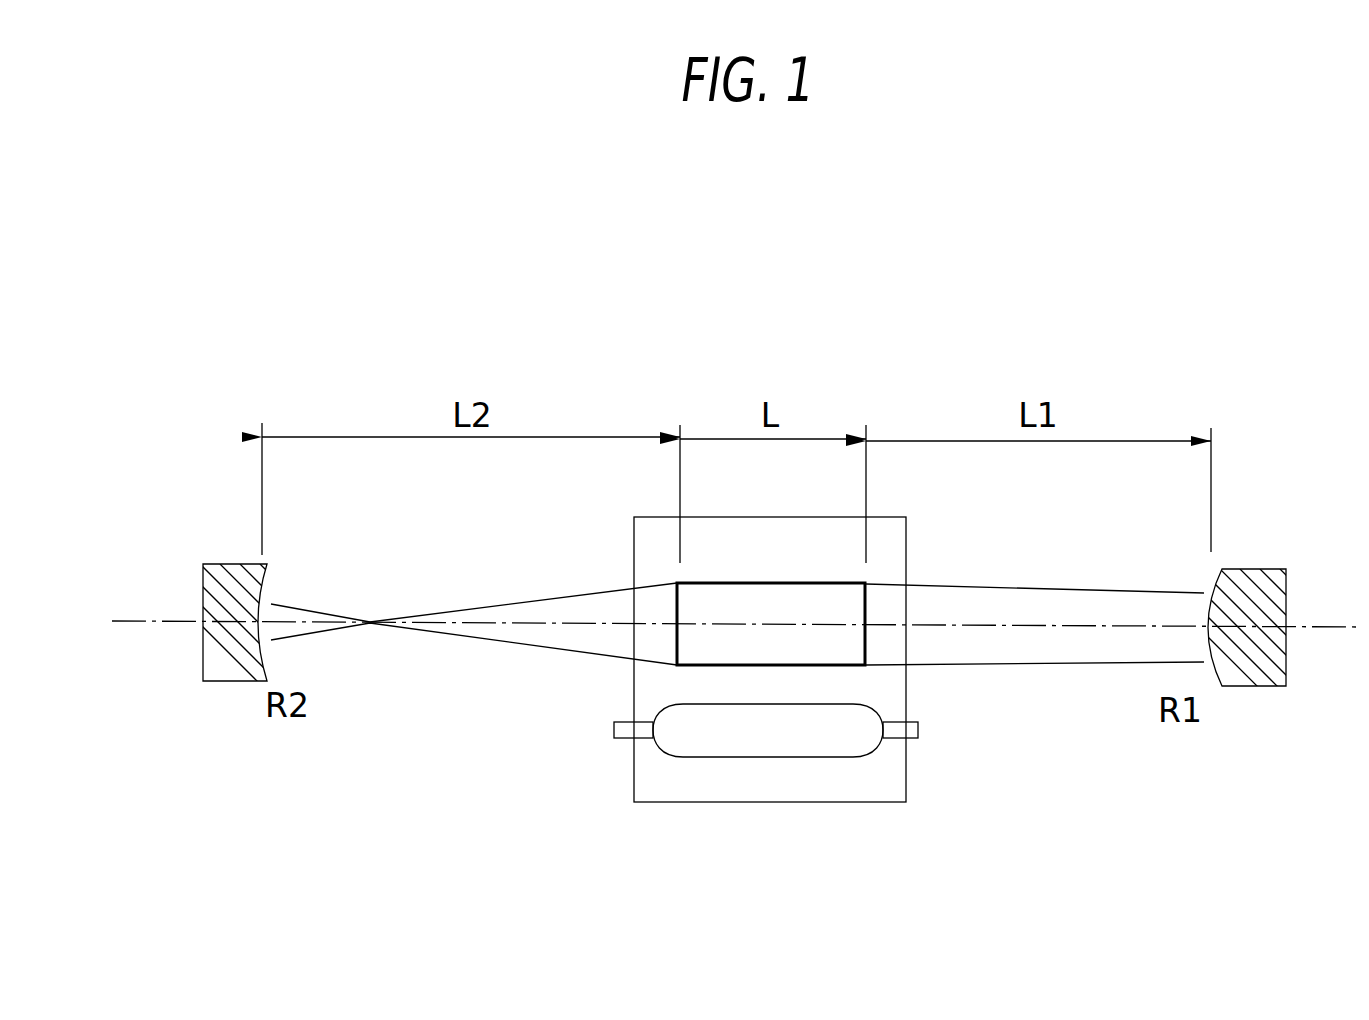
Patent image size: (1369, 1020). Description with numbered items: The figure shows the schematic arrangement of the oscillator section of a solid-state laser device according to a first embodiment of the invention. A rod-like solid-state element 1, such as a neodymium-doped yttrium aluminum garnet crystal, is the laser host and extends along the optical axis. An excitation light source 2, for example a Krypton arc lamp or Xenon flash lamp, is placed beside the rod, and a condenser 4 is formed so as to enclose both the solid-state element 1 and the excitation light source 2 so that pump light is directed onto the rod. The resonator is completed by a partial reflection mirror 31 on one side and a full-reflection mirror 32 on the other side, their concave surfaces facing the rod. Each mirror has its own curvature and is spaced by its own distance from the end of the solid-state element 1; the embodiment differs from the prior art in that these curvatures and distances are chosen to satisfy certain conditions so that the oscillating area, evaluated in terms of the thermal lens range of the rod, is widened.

The rod-like solid-state element 1 is at (710, 667).
The excitation light source 2 is at (820, 730).
The condenser 4 is at (649, 767).
The partial reflection mirror 31 is at (1253, 580).
The full-reflection mirror 32 is at (224, 577).